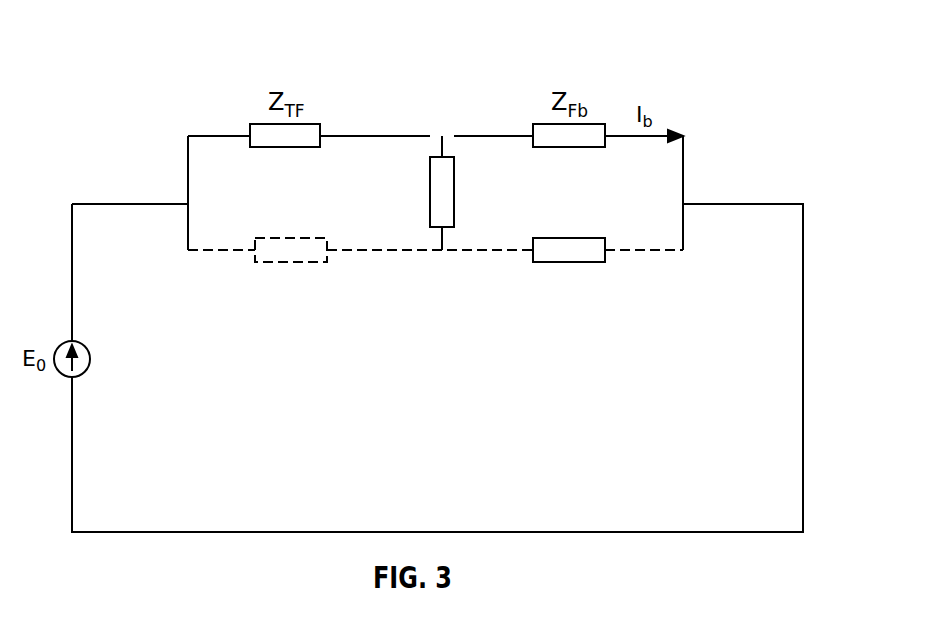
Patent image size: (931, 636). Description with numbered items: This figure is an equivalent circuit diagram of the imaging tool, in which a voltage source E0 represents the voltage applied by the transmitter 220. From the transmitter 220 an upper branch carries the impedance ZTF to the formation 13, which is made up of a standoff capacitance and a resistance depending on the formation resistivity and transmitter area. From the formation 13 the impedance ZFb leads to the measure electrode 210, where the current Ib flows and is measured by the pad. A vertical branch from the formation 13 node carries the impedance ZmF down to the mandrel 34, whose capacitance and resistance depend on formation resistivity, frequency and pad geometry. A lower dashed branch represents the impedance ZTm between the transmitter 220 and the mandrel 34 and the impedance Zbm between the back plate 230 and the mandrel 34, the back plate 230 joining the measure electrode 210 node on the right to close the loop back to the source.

The transmitter 220 is at (135, 204).
The formation 13 is at (442, 136).
The measure electrode 210 is at (667, 130).
The back plate 230 is at (683, 233).
The mandrel 34 is at (470, 252).